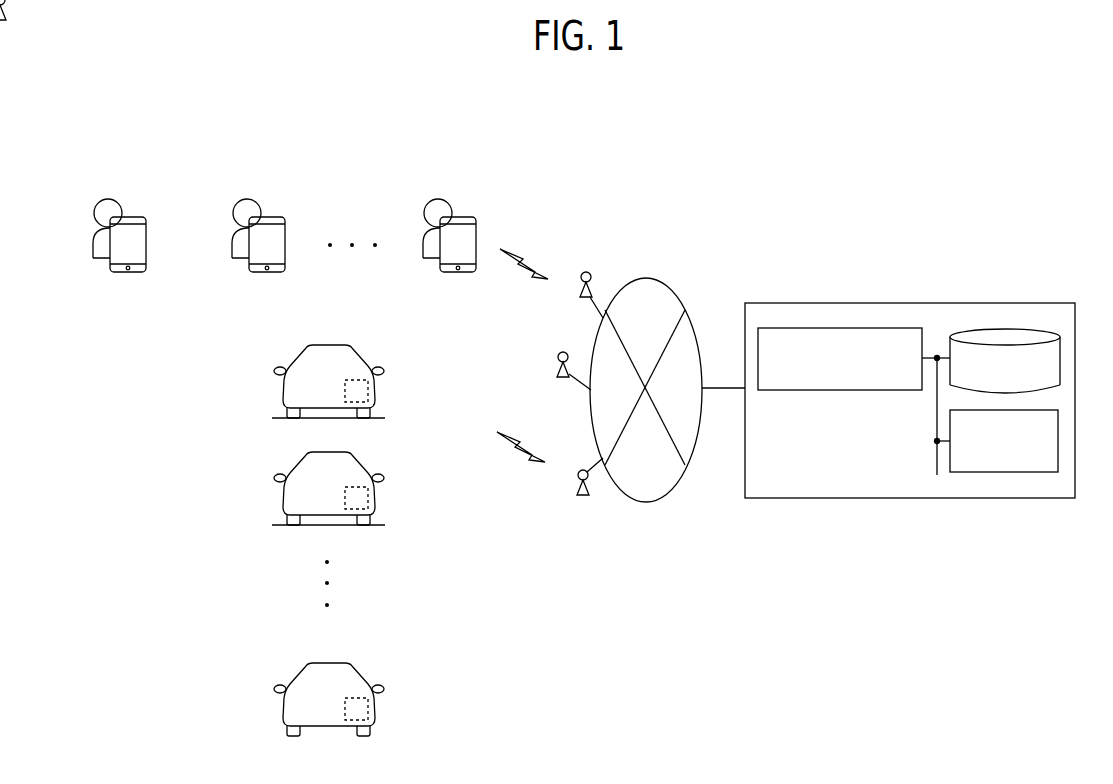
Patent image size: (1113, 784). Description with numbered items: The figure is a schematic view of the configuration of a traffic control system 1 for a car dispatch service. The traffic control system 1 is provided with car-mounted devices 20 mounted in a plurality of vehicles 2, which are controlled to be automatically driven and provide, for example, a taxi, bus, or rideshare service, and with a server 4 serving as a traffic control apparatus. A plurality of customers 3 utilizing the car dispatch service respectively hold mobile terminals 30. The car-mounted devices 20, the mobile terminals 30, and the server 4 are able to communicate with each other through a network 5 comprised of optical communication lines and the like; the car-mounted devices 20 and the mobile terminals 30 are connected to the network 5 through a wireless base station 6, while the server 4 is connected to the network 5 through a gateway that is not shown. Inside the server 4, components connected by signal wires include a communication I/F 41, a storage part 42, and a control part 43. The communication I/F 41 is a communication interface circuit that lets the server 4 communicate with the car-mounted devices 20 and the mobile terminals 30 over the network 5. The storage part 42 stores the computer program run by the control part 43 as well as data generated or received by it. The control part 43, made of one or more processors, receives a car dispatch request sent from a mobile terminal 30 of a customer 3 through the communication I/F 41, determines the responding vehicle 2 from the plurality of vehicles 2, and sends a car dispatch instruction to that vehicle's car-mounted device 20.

The traffic control system 1 is at (752, 215).
The vehicle 2 is at (352, 348).
The car-mounted device 20 is at (371, 387).
The customer 3 is at (105, 200).
The mobile terminal 30 is at (135, 216).
The server 4 is at (773, 303).
The communication I/F 41 is at (822, 390).
The storage part 42 is at (1000, 330).
The control part 43 is at (1005, 472).
The network 5 is at (646, 279).
The wireless base station 6 is at (585, 271).